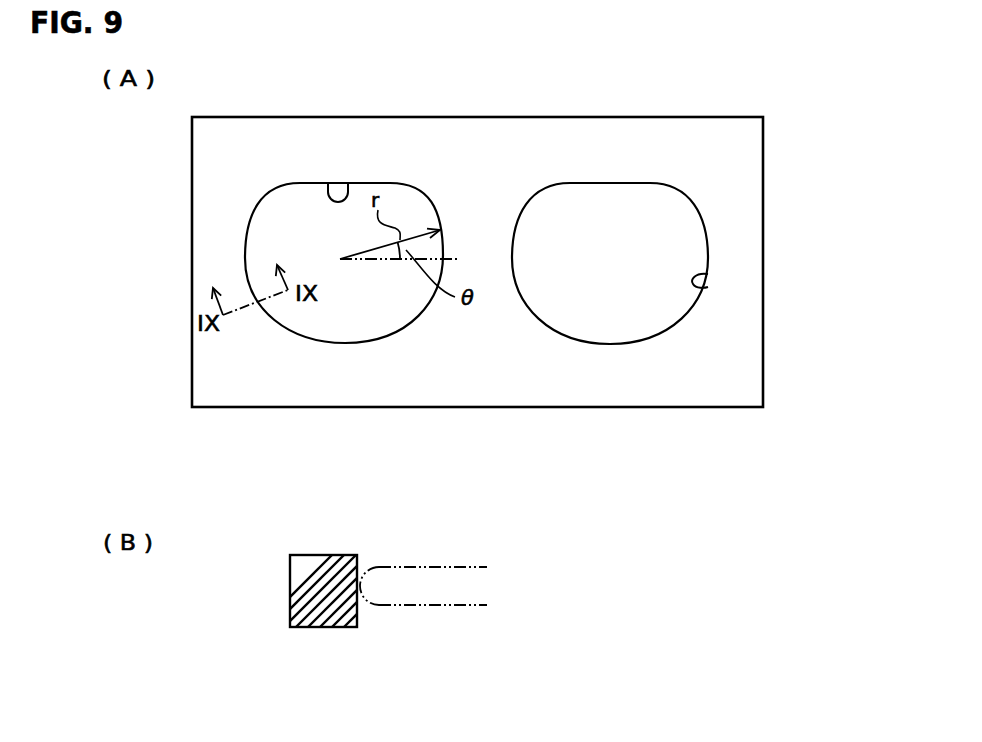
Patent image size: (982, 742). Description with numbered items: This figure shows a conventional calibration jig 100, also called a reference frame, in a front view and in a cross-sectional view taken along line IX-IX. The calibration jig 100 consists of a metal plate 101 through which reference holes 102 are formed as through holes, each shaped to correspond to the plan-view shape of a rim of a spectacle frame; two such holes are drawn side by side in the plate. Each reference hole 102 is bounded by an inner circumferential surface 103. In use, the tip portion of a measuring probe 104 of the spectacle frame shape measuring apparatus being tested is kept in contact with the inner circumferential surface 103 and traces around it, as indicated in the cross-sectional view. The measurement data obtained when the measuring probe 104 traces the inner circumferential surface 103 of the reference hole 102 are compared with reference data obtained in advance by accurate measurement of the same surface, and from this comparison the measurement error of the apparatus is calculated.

The calibration jig 100 is at (642, 95).
The metal plate 101 is at (763, 156).
The reference hole 102 is at (650, 234).
The inner circumferential surface 103 is at (342, 198).
The measuring probe 104 is at (467, 567).